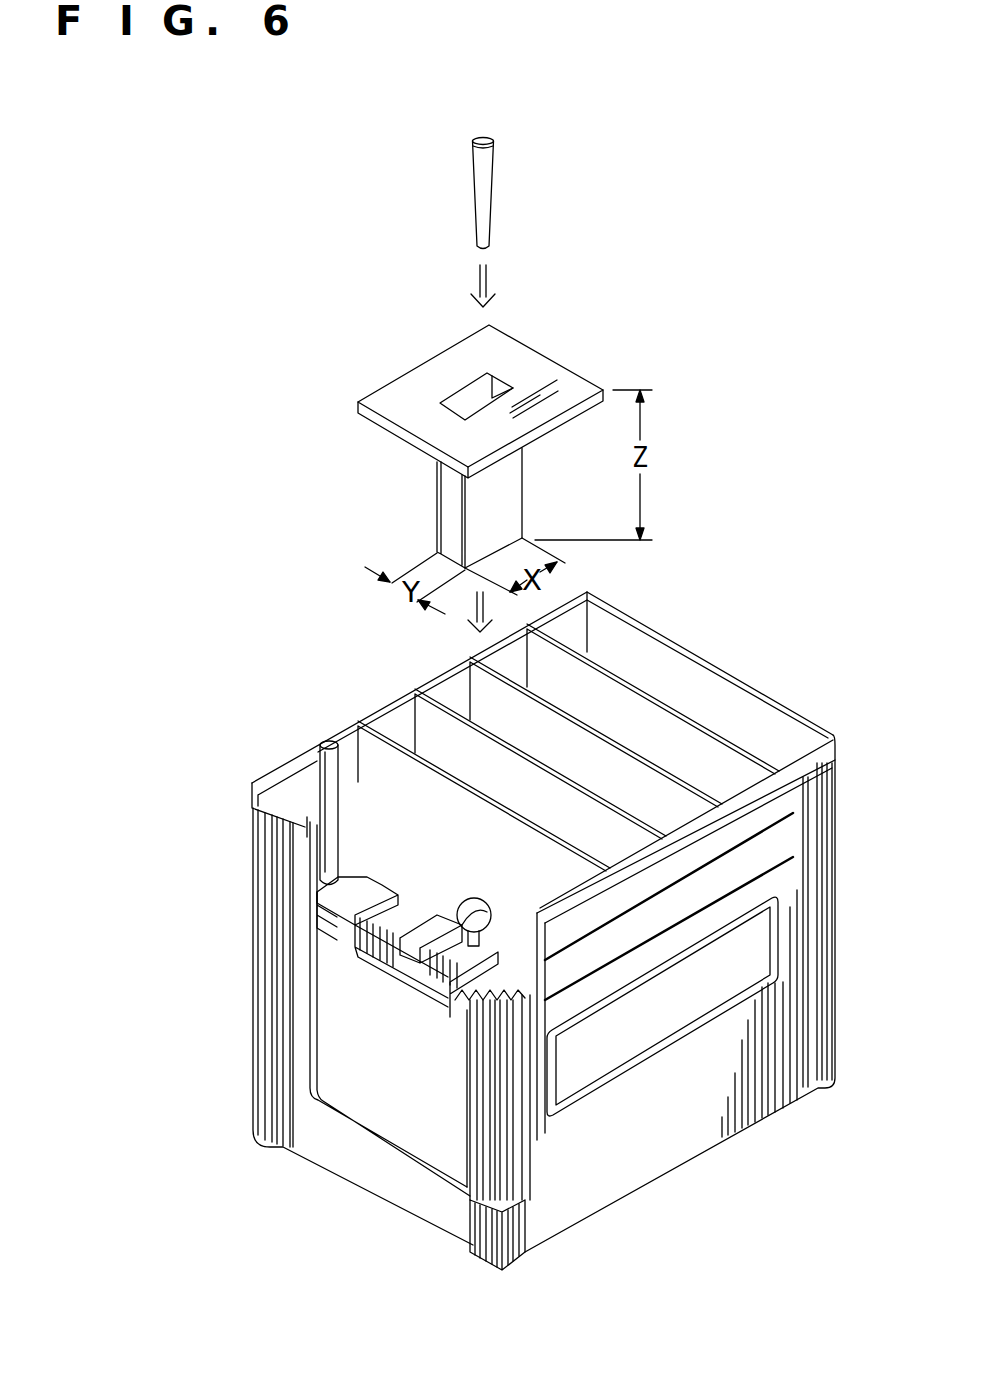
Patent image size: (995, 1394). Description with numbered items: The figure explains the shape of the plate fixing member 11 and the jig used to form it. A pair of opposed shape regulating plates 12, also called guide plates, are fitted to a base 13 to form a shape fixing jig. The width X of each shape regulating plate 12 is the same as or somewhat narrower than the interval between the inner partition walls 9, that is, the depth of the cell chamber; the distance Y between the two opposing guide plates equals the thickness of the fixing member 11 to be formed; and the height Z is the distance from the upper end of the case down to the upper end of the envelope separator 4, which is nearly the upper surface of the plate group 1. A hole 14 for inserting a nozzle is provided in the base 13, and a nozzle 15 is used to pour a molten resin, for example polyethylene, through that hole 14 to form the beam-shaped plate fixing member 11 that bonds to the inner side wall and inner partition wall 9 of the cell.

The plate group 1 is at (385, 1127).
The envelope separator 4 is at (480, 1153).
The inner partition wall 9 is at (377, 830).
The plate fixing member 11 is at (453, 1015).
The shape regulating plate 12 is at (478, 510).
The base 13 is at (573, 390).
The hole 14 is at (468, 397).
The nozzle 15 is at (478, 178).